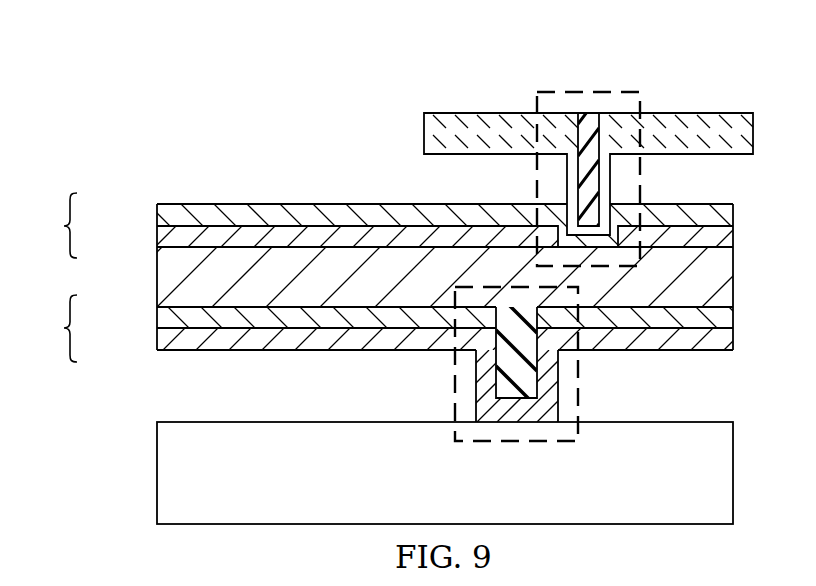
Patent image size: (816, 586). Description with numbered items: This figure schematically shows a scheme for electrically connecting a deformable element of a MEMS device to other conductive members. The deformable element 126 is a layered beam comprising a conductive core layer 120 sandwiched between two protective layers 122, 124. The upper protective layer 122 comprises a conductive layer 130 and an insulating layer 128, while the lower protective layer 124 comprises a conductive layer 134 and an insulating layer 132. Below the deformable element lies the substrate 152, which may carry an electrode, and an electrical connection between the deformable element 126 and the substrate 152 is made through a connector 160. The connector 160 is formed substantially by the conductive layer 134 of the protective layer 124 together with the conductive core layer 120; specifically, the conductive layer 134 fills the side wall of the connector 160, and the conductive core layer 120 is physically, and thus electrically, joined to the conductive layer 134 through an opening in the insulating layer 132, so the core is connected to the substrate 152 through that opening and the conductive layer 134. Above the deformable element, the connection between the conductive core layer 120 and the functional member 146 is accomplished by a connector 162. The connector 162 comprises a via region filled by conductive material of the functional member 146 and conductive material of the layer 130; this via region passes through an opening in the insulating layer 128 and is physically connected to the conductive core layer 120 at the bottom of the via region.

The conductive core layer 120 is at (326, 289).
The protective layer 122 is at (49, 225).
The protective layer 124 is at (49, 328).
The deformable element 126 is at (296, 124).
The insulating layer 128 is at (157, 236).
The conductive layer 130 is at (157, 215).
The insulating layer 132 is at (157, 317).
The conductive layer 134 is at (157, 339).
The functional member 146 is at (668, 113).
The substrate 152 is at (326, 483).
The connector 160 is at (558, 450).
The connector 162 is at (613, 88).